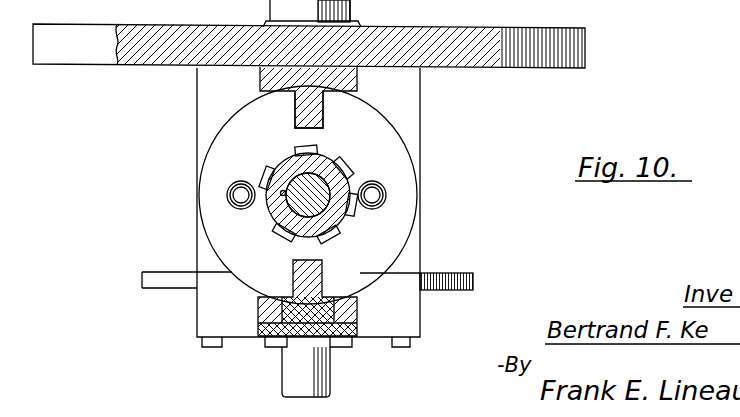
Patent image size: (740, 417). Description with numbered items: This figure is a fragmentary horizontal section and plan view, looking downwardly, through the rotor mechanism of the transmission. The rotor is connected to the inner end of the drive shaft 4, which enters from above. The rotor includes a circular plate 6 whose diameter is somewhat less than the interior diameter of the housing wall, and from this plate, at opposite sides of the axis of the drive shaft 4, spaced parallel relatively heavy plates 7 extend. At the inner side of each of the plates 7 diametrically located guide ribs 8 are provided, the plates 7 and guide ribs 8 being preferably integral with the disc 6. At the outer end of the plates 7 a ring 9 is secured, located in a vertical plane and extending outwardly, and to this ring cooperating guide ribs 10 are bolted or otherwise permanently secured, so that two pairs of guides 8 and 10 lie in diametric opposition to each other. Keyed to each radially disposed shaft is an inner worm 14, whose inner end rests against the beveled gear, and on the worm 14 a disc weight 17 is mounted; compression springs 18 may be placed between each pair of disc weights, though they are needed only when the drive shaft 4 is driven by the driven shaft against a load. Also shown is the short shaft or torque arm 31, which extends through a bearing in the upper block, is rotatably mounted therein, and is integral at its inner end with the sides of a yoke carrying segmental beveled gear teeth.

The drive shaft 4 is at (352, 7).
The circular plate 6 is at (486, 60).
The plates 7 is at (416, 148).
The guide ribs 8 is at (314, 96).
The ring 9 is at (437, 291).
The cooperating guide ribs 10 is at (324, 282).
The worm 14 is at (323, 169).
The disc weight 17 is at (380, 133).
The compression springs 18 is at (240, 209).
The torque arm 31 is at (330, 367).